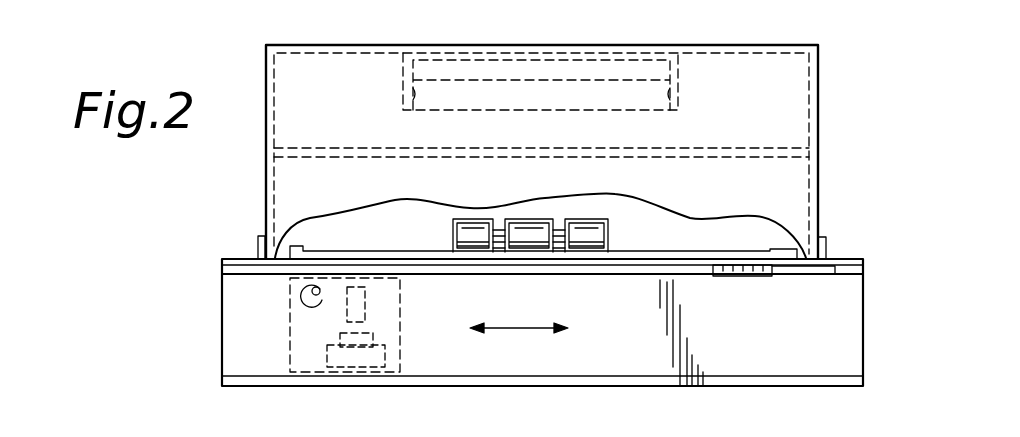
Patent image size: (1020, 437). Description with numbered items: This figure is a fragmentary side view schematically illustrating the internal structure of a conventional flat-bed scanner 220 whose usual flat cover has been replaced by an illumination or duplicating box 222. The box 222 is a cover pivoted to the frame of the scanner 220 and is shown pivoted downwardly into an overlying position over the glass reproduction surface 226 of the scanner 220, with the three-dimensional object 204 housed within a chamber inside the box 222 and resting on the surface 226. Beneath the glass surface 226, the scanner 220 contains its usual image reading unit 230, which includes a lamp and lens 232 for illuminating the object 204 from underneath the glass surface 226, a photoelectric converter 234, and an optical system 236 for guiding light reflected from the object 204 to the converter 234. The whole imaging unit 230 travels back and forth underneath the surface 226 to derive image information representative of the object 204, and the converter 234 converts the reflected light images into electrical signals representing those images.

The three-dimensional object 204 is at (610, 237).
The flat-bed scanner 220 is at (222, 331).
The illumination or duplicating box 222 is at (812, 82).
The glass reproduction surface 226 is at (710, 251).
The image reading unit 230 is at (290, 364).
The lamp and lens 232 is at (300, 297).
The photoelectric converter 234 is at (386, 338).
The optical system 236 is at (368, 303).